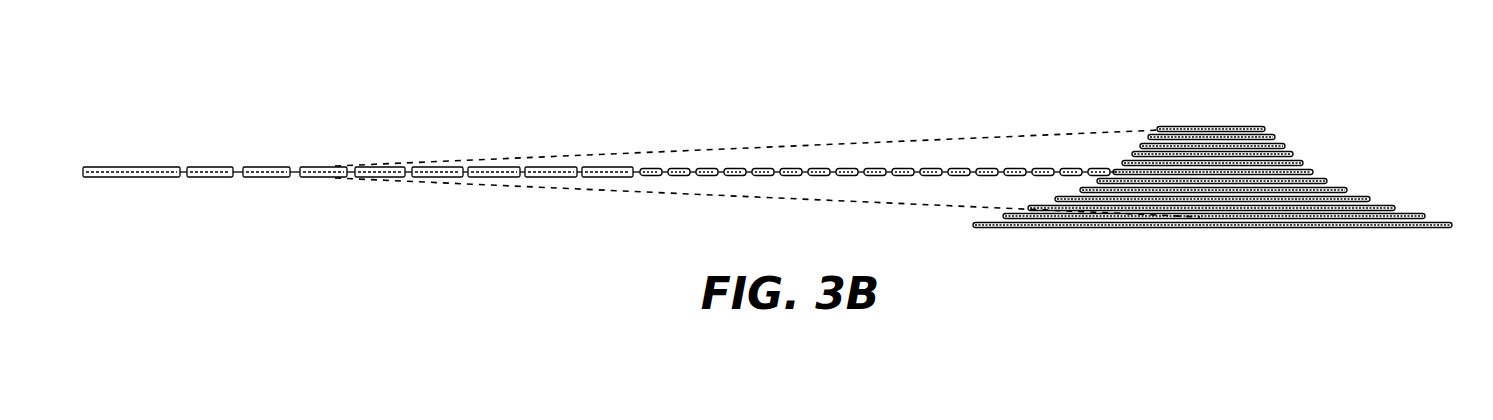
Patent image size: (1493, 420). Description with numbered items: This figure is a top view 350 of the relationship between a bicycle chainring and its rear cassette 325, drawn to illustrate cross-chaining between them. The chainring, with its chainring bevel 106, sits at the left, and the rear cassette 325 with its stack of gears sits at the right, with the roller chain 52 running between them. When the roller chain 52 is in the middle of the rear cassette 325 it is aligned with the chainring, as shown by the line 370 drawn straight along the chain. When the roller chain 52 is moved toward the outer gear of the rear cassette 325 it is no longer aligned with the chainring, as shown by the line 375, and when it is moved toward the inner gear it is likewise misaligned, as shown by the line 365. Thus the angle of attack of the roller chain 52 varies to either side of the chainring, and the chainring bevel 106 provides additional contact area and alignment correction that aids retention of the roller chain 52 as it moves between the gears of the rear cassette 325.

The top view 350 is at (202, 90).
The chainring bevel 106 is at (222, 165).
The roller chain 52 is at (497, 180).
The line 370 is at (764, 180).
The line 375 is at (1098, 132).
The line 365 is at (943, 207).
The rear cassette 325 is at (1262, 228).